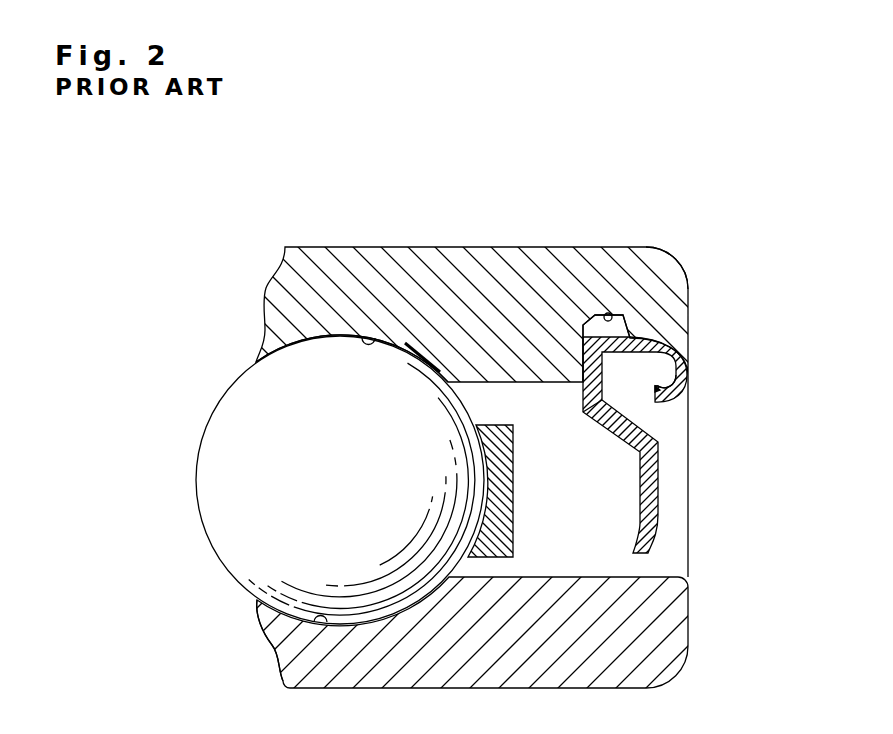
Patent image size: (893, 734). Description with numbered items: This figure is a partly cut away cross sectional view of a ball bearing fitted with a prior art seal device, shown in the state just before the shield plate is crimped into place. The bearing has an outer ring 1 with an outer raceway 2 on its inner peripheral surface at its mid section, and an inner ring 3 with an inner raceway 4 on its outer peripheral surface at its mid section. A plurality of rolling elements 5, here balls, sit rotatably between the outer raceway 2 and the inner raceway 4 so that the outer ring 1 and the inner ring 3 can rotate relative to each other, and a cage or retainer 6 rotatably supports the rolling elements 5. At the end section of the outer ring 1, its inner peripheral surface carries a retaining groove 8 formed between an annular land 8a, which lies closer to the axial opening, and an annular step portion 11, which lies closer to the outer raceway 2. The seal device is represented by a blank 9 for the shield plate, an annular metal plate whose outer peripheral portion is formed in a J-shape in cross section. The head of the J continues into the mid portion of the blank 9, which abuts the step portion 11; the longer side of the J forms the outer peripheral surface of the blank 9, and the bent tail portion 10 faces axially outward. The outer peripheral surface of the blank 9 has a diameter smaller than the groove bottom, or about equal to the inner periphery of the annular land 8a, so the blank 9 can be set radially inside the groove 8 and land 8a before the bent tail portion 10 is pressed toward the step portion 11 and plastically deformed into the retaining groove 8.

The outer ring 1 is at (455, 258).
The outer raceway 2 is at (378, 338).
The inner ring 3 is at (662, 655).
The inner raceway 4 is at (273, 650).
The rolling elements 5 is at (500, 425).
The cage or retainer 6 is at (408, 365).
The retaining groove 8 is at (610, 313).
The annular land 8a is at (672, 300).
The blank 9 is at (660, 475).
The bent tail portion 10 is at (687, 377).
The annular step portion 11 is at (592, 418).